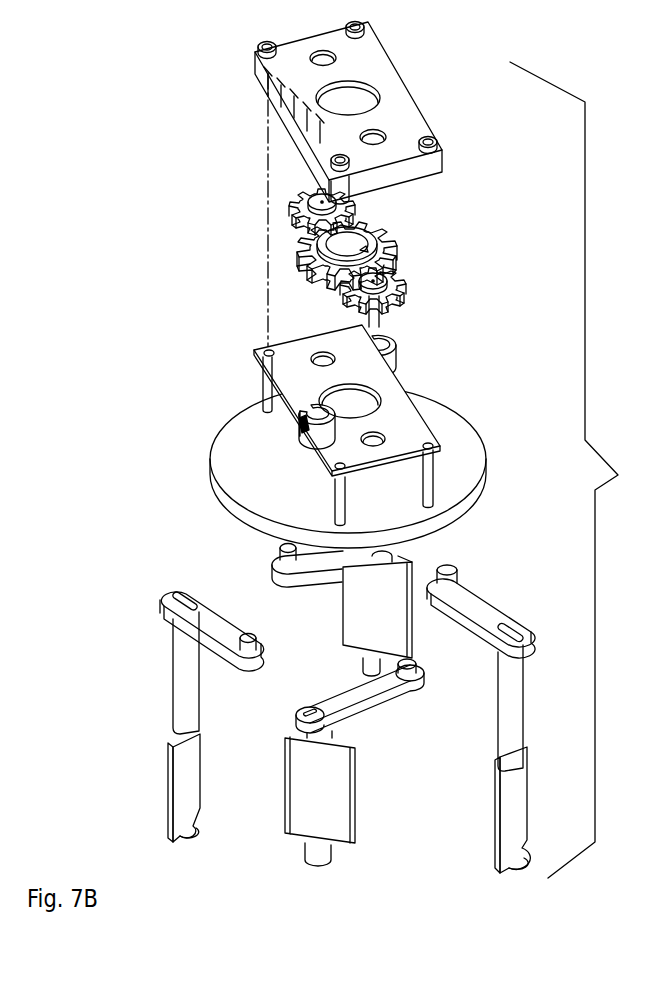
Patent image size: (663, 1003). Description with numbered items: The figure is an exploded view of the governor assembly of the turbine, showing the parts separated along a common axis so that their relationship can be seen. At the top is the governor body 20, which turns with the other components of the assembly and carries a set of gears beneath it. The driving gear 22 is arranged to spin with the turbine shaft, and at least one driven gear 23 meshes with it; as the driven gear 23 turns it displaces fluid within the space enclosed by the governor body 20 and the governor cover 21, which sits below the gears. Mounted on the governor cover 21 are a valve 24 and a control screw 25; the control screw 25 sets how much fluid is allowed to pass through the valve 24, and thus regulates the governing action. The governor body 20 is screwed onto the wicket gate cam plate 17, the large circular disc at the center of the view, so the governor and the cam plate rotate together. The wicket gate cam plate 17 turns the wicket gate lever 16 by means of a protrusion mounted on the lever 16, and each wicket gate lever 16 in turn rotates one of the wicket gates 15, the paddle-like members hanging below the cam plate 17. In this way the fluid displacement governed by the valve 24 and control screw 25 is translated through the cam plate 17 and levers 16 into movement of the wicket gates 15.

The wicket gates 15 is at (187, 765).
The wicket gate lever 16 is at (197, 633).
The wicket gate cam plate 17 is at (487, 442).
The governor body 20 is at (415, 100).
The governor cover 21 is at (402, 422).
The driving gear 22 is at (398, 246).
The driven gear 23 is at (363, 213).
The valve 24 is at (300, 411).
The control screw 25 is at (300, 442).